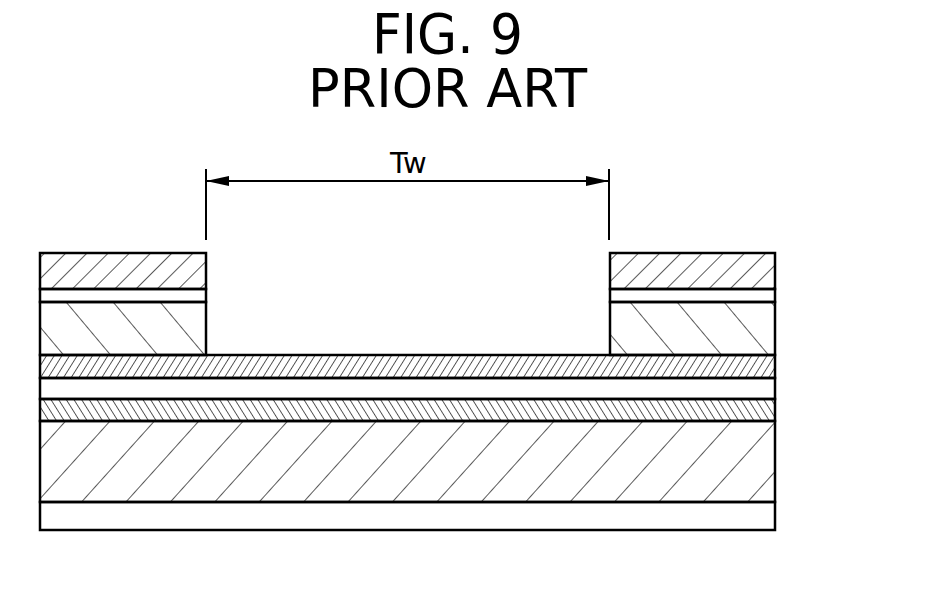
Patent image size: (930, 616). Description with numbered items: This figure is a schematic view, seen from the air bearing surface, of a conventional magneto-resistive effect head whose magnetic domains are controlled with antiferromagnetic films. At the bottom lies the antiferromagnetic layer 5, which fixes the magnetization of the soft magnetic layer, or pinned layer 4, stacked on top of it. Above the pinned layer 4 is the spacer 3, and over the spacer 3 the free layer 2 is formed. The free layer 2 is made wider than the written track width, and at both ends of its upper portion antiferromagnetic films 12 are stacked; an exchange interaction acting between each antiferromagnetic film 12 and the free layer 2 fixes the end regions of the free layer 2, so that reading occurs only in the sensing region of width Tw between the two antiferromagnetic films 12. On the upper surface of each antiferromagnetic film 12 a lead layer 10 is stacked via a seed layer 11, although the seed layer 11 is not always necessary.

The free layer 2 is at (343, 368).
The spacer 3 is at (385, 390).
The soft magnetic layer (pinned layer) 4 is at (428, 413).
The antiferromagnetic layer 5 is at (348, 483).
The lead layer 10 is at (757, 262).
The seed layer 11 is at (757, 298).
The antiferromagnetic film 12 is at (757, 335).